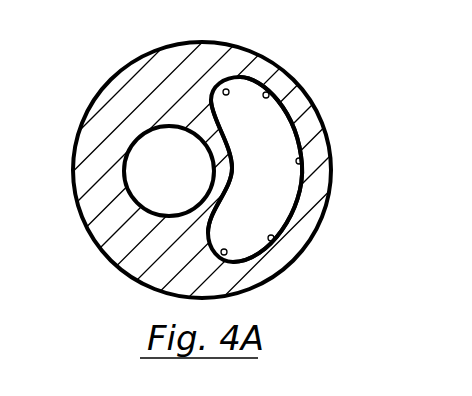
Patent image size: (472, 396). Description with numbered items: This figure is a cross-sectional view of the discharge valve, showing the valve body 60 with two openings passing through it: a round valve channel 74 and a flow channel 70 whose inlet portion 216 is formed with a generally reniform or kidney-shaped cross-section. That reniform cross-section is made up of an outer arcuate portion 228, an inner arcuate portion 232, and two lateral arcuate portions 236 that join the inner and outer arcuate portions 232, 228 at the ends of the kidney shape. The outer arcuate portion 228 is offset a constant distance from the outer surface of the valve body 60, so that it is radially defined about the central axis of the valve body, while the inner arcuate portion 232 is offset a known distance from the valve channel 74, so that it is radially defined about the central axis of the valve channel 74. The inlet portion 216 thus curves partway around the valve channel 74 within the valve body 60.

The valve body 60 is at (323, 120).
The valve channel 74 is at (134, 140).
The flow channel 70 is at (290, 254).
The inlet portion 216 is at (282, 80).
The inner arcuate portion 232 is at (237, 175).
The outer arcuate portion 228 is at (303, 160).
The lateral arcuate portions 236 is at (231, 86).